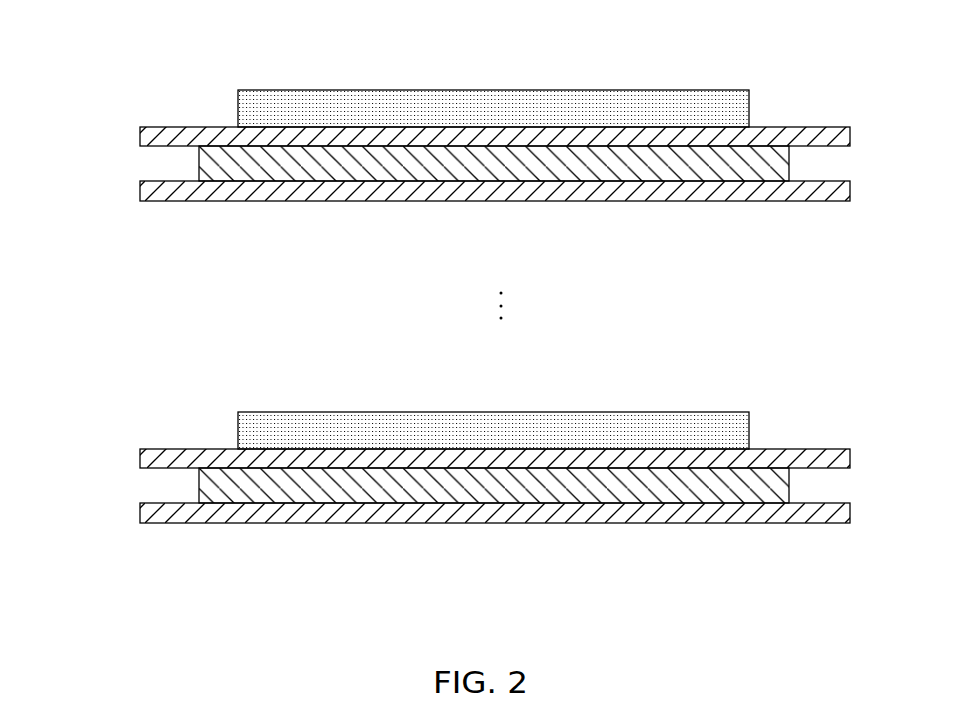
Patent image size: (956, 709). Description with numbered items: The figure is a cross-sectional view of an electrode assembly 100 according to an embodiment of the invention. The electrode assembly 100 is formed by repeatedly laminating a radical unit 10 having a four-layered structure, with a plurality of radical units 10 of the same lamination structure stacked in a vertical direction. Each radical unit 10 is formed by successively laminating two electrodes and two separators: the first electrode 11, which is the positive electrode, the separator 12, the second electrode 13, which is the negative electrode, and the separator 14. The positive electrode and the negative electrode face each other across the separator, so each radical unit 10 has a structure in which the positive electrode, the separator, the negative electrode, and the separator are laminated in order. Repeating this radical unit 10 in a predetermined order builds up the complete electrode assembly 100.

The electrode assembly 100 is at (873, 89).
The radical unit 10 is at (65, 52).
The first electrode 11 is at (238, 108).
The separator 12 is at (148, 140).
The second electrode 13 is at (209, 165).
The separator 14 is at (148, 187).